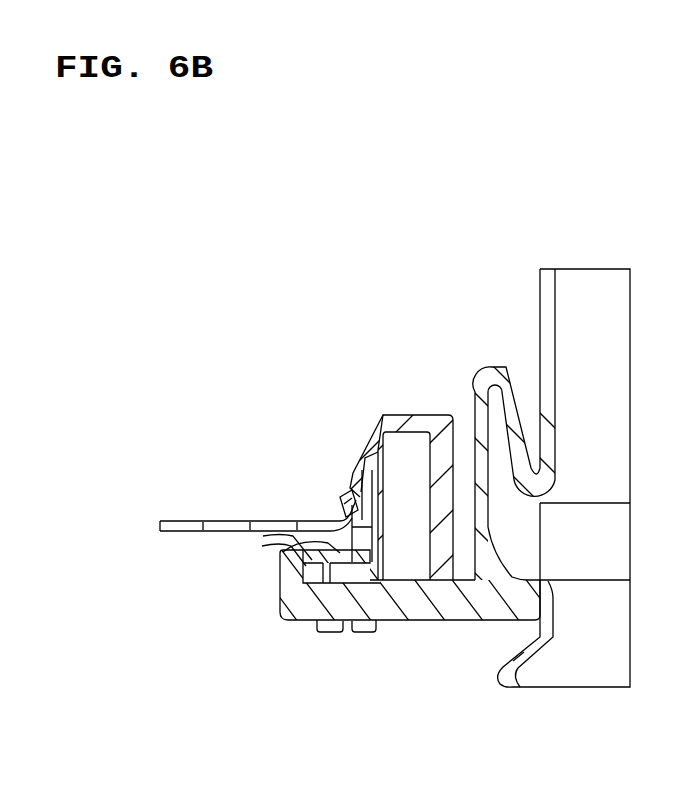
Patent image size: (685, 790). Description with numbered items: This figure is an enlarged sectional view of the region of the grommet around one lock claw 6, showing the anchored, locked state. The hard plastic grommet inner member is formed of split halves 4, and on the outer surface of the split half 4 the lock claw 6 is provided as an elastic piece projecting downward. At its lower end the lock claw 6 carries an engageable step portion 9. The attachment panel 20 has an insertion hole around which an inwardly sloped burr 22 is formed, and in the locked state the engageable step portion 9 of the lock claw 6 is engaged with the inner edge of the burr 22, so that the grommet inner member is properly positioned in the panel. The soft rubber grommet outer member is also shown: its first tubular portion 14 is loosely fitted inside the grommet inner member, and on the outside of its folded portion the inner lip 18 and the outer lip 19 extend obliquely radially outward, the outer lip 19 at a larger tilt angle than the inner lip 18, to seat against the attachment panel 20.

The first tubular portion 14 is at (548, 269).
The split half 4 is at (438, 417).
The lock claw 6 is at (353, 472).
The burr 22 is at (352, 510).
The attachment panel 20 is at (192, 520).
The outer lip 19 is at (265, 548).
The inner lip 18 is at (281, 590).
The engageable step portion 9 is at (360, 515).